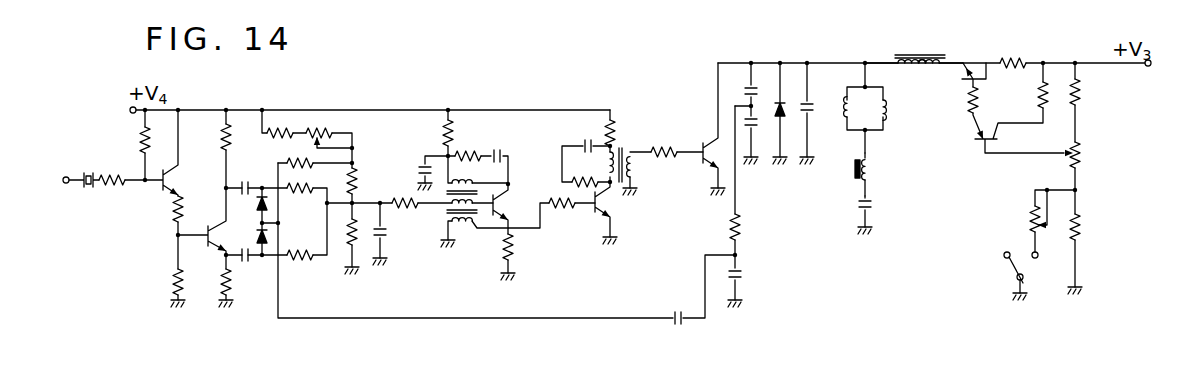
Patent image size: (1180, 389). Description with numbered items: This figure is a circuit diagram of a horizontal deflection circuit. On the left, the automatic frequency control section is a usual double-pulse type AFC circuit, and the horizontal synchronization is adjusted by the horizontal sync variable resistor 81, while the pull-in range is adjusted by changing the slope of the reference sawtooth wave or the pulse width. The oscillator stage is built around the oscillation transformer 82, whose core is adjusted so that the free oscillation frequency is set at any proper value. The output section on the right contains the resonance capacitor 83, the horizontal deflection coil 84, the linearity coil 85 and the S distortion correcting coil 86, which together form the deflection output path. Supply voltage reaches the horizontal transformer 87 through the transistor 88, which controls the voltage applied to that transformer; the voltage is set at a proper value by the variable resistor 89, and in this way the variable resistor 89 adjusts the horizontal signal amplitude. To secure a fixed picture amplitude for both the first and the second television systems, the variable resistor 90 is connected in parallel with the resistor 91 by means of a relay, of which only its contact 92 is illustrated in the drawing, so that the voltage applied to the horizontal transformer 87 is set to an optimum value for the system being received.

The horizontal sync variable resistor 81 is at (327, 124).
The oscillation transformer 82 is at (443, 210).
The resonance capacitor 83 is at (811, 114).
The horizontal deflection coil 84 is at (888, 125).
The linearity coil 85 is at (878, 172).
The S distortion correcting coil 86 is at (873, 206).
The horizontal transformer 87 is at (908, 50).
The transistor 88 is at (970, 62).
The variable resistor 89 is at (1081, 158).
The variable resistor 90 is at (1028, 222).
The resistor 91 is at (1081, 225).
The relay contact 92 is at (1010, 269).